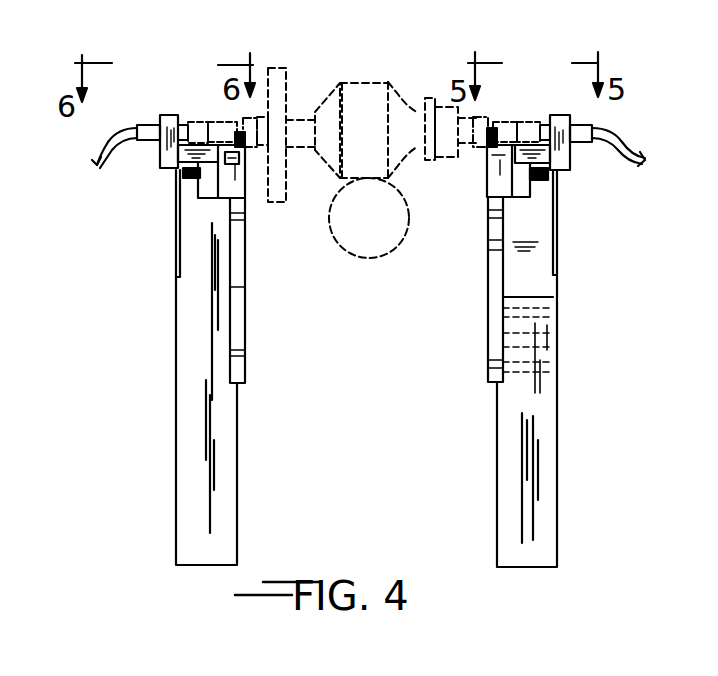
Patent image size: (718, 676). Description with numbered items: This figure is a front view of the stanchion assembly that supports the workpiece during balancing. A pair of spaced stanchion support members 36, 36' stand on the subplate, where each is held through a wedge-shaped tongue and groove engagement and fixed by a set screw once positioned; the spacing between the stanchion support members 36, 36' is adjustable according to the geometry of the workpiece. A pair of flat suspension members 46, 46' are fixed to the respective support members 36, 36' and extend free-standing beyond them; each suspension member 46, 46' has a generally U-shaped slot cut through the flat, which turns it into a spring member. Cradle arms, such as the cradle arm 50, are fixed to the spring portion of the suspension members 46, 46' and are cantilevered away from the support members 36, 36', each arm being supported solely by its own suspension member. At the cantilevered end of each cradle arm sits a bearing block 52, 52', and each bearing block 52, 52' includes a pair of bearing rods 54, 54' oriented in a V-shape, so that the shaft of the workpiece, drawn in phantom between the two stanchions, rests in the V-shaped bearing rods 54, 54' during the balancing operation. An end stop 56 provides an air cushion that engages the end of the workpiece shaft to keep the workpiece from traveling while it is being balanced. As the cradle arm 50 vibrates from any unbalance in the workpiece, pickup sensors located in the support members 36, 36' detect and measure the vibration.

The stanchion support member 36 is at (566, 368).
The stanchion support member 36' is at (244, 367).
The flat suspension member 46 is at (458, 289).
The flat suspension member 46' is at (274, 290).
The cradle arm 50 is at (247, 172).
The bearing block 52 is at (489, 159).
The bearing block 52' is at (194, 108).
The bearing rod 54 is at (514, 106).
The bearing rod 54' is at (218, 79).
The end stop 56 is at (592, 148).